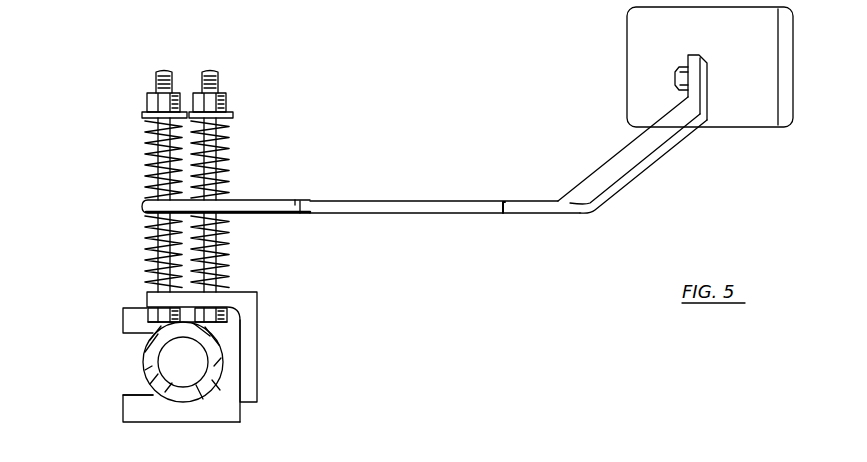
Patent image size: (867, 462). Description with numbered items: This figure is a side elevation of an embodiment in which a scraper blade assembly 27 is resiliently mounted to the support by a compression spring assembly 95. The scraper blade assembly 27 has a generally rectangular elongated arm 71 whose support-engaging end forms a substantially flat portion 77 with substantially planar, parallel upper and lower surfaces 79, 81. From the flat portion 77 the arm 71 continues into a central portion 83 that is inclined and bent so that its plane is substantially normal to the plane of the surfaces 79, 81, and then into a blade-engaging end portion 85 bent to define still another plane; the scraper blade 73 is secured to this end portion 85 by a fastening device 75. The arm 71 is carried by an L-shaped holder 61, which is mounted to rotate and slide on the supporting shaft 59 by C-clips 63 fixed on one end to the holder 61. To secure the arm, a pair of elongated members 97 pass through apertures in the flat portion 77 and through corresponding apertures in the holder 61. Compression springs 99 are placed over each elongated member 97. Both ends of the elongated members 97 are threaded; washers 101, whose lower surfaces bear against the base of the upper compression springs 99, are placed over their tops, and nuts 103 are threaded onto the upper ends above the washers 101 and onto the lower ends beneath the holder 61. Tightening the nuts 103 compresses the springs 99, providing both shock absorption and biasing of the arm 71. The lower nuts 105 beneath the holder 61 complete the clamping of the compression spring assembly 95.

The scraper blade assembly 27 is at (414, 233).
The supporting shaft 59 is at (145, 378).
The holder 61 is at (257, 365).
The C-clips 63 is at (132, 412).
The elongated arm 71 is at (371, 200).
The scraper blade 73 is at (760, 38).
The fastening device 75 is at (675, 78).
The substantially flat portion 77 is at (503, 202).
The upper surface 79 is at (244, 200).
The lower surface 81 is at (150, 219).
The central portion 83 is at (613, 160).
The blade-engaging end portion 85 is at (707, 83).
The compression spring assembly 95 is at (248, 137).
The elongated members 97 is at (208, 71).
The compression springs 99 is at (150, 162).
The washers 101 is at (144, 114).
The nuts 103 is at (150, 98).
The lower nuts 105 is at (150, 315).